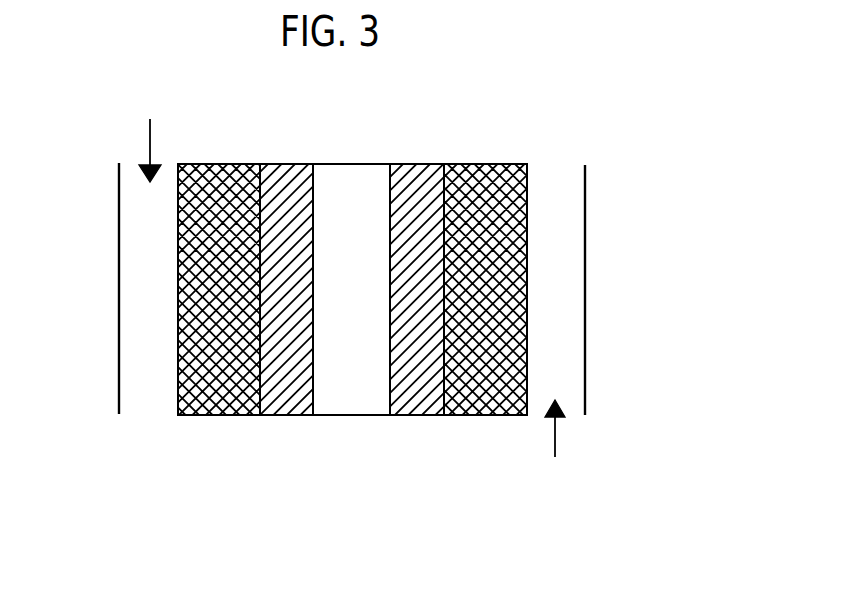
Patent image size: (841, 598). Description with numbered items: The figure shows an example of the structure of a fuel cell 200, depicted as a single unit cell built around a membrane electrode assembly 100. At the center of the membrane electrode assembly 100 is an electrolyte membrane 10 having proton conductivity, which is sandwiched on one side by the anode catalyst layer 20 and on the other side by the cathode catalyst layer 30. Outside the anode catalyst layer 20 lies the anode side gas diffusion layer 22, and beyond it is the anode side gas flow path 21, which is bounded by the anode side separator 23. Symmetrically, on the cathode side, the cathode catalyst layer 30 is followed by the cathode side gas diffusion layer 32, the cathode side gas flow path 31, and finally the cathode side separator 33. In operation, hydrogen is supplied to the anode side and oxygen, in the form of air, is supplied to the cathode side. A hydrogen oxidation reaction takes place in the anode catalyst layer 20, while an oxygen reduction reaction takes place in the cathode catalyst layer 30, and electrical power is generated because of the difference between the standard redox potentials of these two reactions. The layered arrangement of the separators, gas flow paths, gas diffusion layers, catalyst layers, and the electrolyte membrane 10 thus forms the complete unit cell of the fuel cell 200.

The fuel cell 200 is at (513, 127).
The membrane electrode assembly 100 is at (384, 373).
The electrolyte membrane 10 is at (350, 416).
The anode catalyst layer 20 is at (283, 416).
The cathode catalyst layer 30 is at (410, 416).
The anode side gas diffusion layer 22 is at (217, 416).
The cathode side gas diffusion layer 32 is at (260, 528).
The anode side gas flow path 21 is at (155, 416).
The cathode side gas flow path 31 is at (575, 410).
The anode side separator 23 is at (119, 288).
The cathode side separator 33 is at (586, 294).